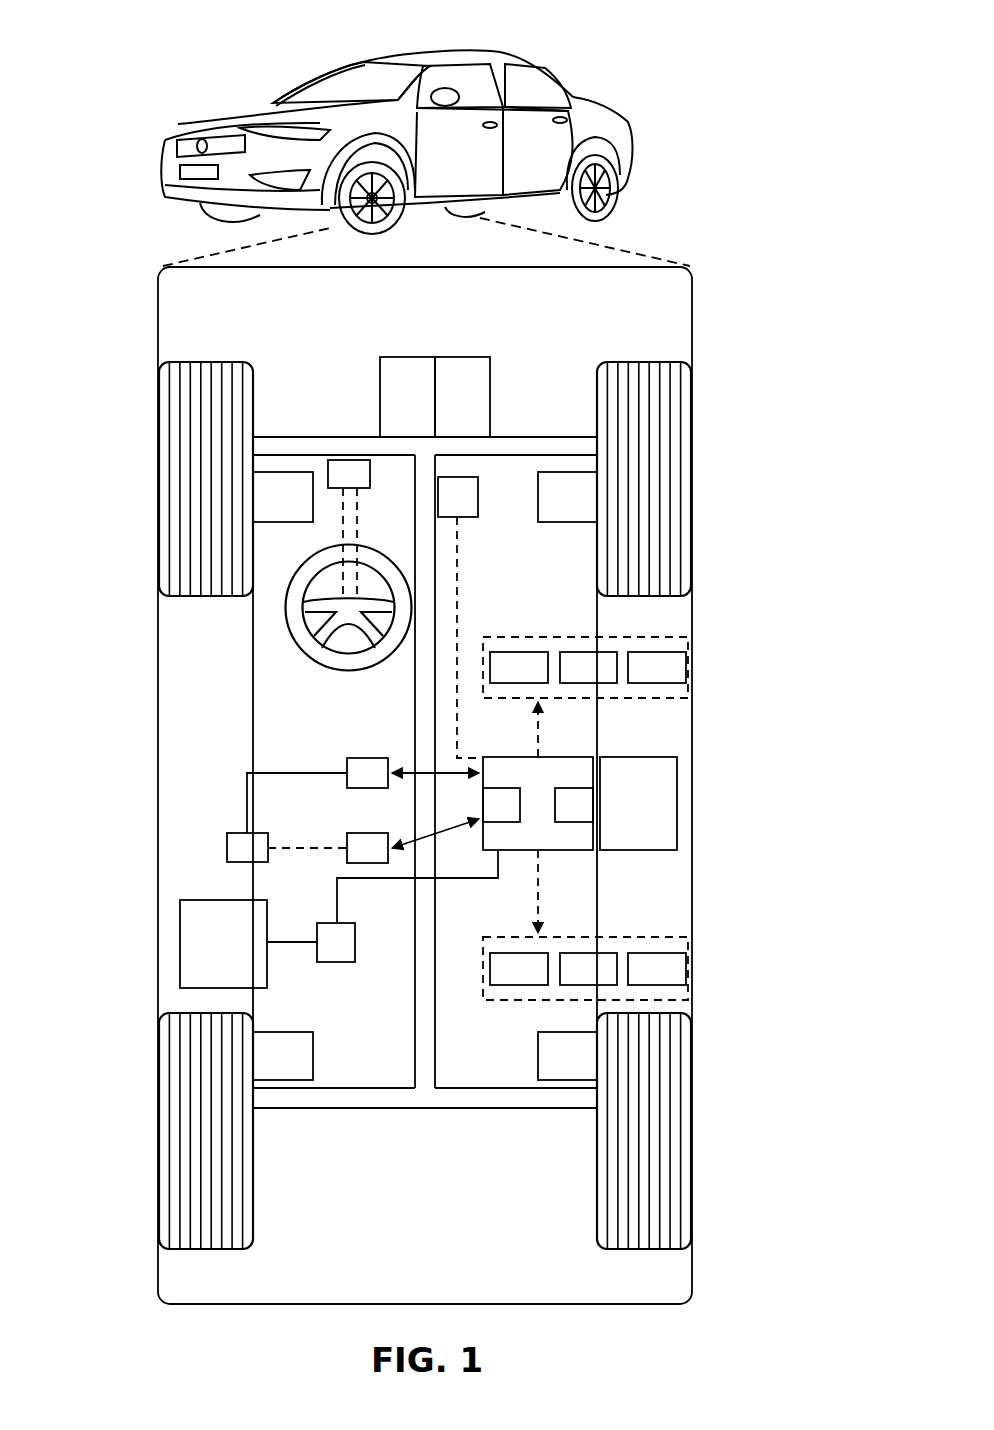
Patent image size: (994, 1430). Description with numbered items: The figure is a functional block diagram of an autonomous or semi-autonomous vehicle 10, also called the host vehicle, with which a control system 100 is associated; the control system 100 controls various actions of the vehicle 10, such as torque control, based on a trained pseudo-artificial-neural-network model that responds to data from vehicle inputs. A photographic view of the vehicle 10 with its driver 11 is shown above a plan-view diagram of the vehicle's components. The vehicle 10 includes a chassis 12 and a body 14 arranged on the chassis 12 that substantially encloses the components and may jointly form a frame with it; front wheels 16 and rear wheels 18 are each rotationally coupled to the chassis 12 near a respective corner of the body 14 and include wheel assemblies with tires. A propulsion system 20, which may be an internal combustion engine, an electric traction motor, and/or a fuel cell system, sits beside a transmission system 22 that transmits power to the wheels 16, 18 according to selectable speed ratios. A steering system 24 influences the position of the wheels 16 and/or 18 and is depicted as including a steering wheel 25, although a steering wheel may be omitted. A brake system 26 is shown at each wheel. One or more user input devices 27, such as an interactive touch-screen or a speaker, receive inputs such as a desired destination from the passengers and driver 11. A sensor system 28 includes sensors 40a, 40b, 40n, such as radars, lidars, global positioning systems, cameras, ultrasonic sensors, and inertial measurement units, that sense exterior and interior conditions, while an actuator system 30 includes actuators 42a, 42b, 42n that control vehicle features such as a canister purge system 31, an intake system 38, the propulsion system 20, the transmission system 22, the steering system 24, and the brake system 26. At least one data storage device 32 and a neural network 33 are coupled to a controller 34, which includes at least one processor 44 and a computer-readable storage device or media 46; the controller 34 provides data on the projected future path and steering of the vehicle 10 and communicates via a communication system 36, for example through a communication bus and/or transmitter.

The vehicle 10 is at (175, 142).
The driver 11 is at (472, 70).
The chassis 12 is at (428, 1110).
The body 14 is at (159, 680).
The front wheels 16 is at (175, 437).
The rear wheels 18 is at (173, 1150).
The propulsion system 20 is at (388, 397).
The transmission system 22 is at (472, 395).
The steering system 24 is at (300, 667).
The steering wheel 25 is at (348, 661).
The brake system 26 is at (295, 505).
The user input devices 27 is at (445, 508).
The sensor system 28 is at (530, 632).
The actuator system 30 is at (630, 935).
The canister purge system 31 is at (323, 953).
The data storage device 32 is at (360, 768).
The neural network 33 is at (245, 834).
The controller 34 is at (498, 770).
The communication system 36 is at (630, 772).
The intake system 38 is at (222, 898).
The sensor 40a is at (502, 660).
The sensor 40b is at (577, 665).
The sensor 40n is at (678, 672).
The actuator 42a is at (510, 960).
The actuator 42b is at (597, 960).
The actuator 42n is at (678, 972).
The processor 44 is at (490, 806).
The computer-readable storage device or media 46 is at (565, 798).
The control system 100 is at (360, 848).